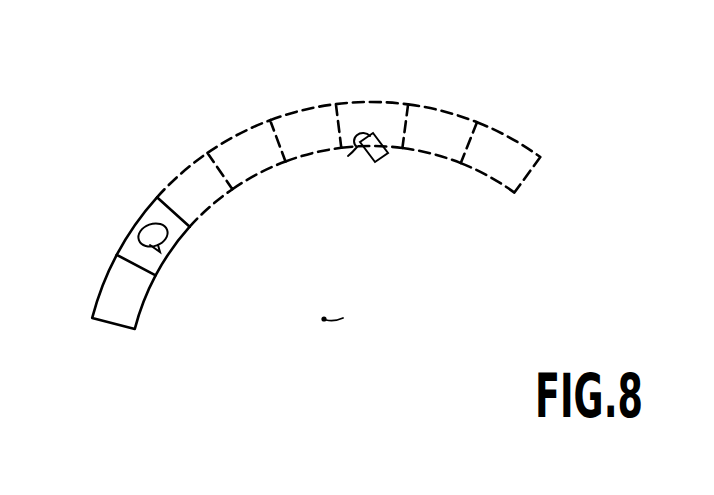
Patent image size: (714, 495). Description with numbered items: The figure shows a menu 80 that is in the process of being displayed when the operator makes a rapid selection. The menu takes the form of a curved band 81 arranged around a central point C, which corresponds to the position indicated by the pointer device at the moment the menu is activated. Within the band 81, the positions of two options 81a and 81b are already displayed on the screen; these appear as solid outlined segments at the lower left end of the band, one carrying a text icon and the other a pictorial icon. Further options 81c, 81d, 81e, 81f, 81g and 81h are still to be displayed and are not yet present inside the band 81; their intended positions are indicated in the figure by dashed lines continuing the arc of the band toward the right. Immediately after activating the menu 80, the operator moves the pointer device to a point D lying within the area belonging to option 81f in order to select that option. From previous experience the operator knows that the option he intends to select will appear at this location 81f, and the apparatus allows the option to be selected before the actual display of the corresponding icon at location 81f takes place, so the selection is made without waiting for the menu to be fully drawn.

The menu 80 is at (190, 151).
The curved band 81 is at (106, 334).
The option 81a is at (100, 307).
The option 81b is at (128, 247).
The option 81c is at (177, 193).
The option 81d is at (237, 153).
The option 81e is at (302, 123).
The option 81f is at (370, 118).
The option 81g is at (438, 127).
The option 81h is at (500, 150).
The central point C is at (339, 321).
The point D is at (360, 158).